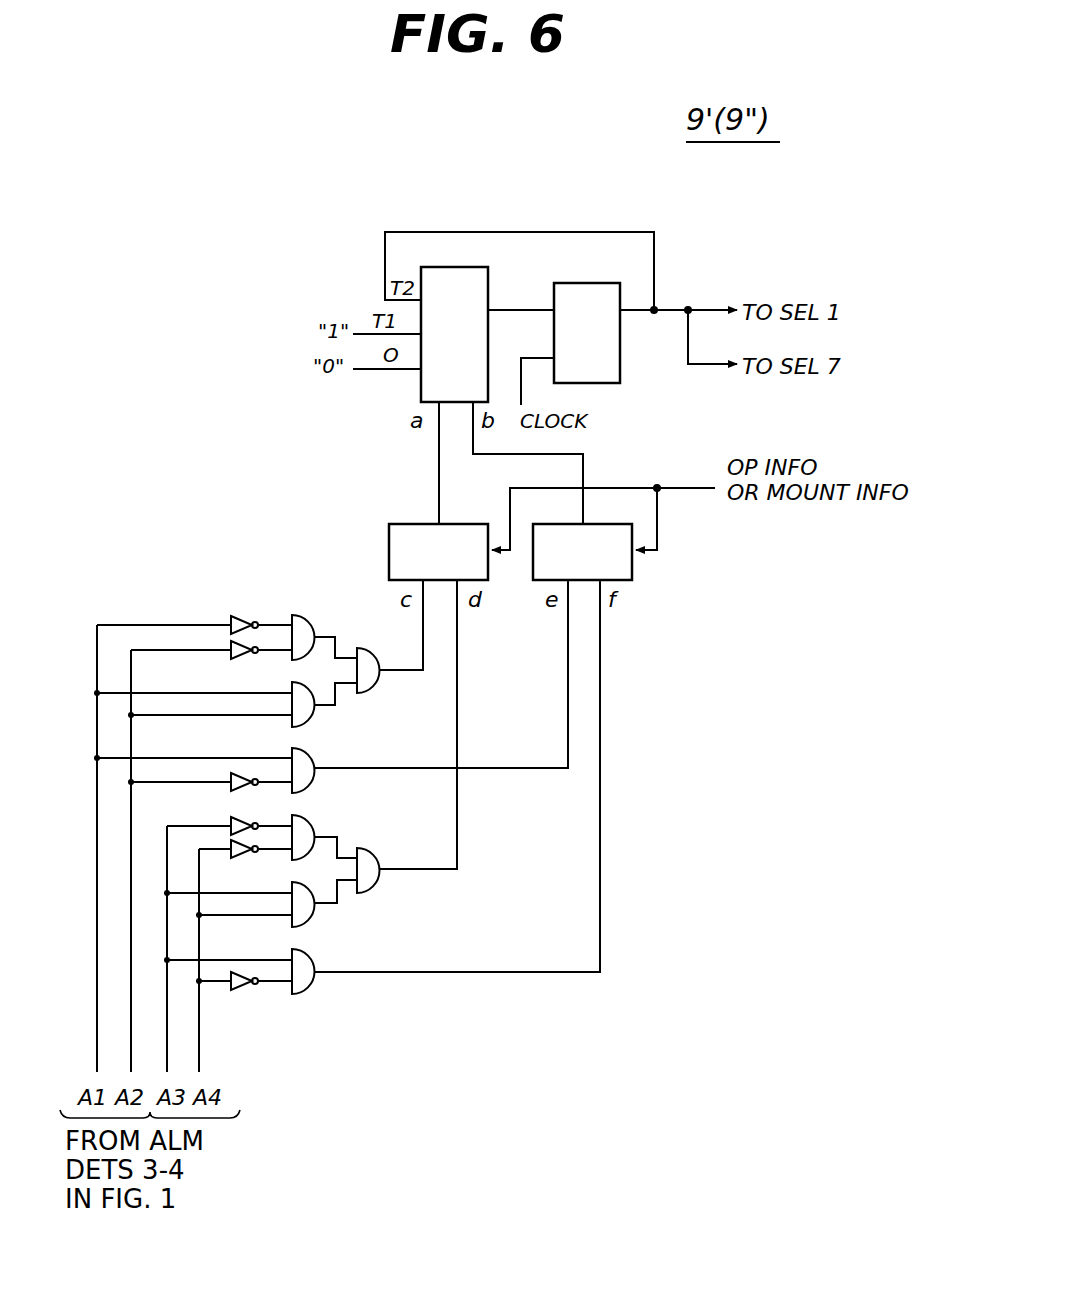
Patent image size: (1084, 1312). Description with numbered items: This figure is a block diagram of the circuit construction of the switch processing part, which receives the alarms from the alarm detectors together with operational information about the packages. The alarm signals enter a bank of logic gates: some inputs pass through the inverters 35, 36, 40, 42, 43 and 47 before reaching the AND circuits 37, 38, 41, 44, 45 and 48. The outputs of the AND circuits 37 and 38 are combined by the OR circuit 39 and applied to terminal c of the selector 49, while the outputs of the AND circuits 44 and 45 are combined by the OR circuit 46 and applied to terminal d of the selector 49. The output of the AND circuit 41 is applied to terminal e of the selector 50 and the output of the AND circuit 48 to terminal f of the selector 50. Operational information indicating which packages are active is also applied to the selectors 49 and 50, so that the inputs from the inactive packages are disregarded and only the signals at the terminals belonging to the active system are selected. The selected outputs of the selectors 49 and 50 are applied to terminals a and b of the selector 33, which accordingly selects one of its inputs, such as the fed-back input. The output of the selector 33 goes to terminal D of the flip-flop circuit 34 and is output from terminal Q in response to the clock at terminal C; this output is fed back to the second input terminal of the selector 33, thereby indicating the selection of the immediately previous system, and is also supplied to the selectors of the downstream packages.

The selector 33 is at (470, 268).
The flip-flop circuit 34 is at (622, 384).
The inverter 35 is at (243, 616).
The inverter 36 is at (240, 658).
The AND circuit 37 is at (300, 614).
The AND circuit 38 is at (314, 714).
The OR circuit 39 is at (378, 686).
The inverter 40 is at (243, 790).
The AND circuit 41 is at (310, 752).
The inverter 42 is at (235, 822).
The inverter 43 is at (239, 857).
The AND circuit 44 is at (312, 816).
The AND circuit 45 is at (314, 922).
The OR circuit 46 is at (380, 885).
The inverter 47 is at (241, 990).
The AND circuit 48 is at (314, 994).
The selector 49 is at (389, 546).
The selector 50 is at (632, 568).